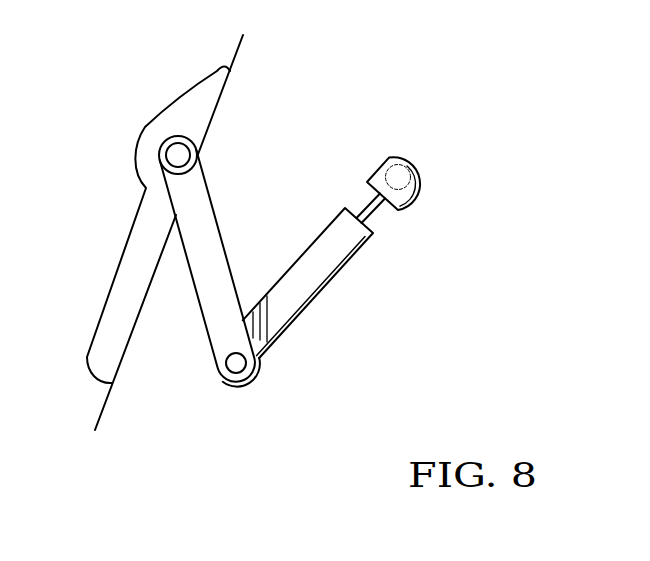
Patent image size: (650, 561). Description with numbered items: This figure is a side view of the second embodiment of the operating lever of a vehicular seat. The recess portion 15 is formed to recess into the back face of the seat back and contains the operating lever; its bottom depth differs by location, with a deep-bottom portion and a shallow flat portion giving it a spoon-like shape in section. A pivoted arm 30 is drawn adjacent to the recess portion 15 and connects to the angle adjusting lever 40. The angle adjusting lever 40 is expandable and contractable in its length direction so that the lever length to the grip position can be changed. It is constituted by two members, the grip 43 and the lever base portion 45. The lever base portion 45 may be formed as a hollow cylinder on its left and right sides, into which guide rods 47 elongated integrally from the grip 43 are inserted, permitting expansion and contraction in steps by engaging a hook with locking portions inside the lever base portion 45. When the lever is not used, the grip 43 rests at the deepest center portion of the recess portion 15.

The recess portion 15 is at (145, 232).
The arm 30 is at (212, 252).
The angle adjusting lever 40 is at (351, 252).
The grip 43 is at (400, 210).
The lever base portion 45 is at (347, 247).
The guide rods 47 is at (365, 205).